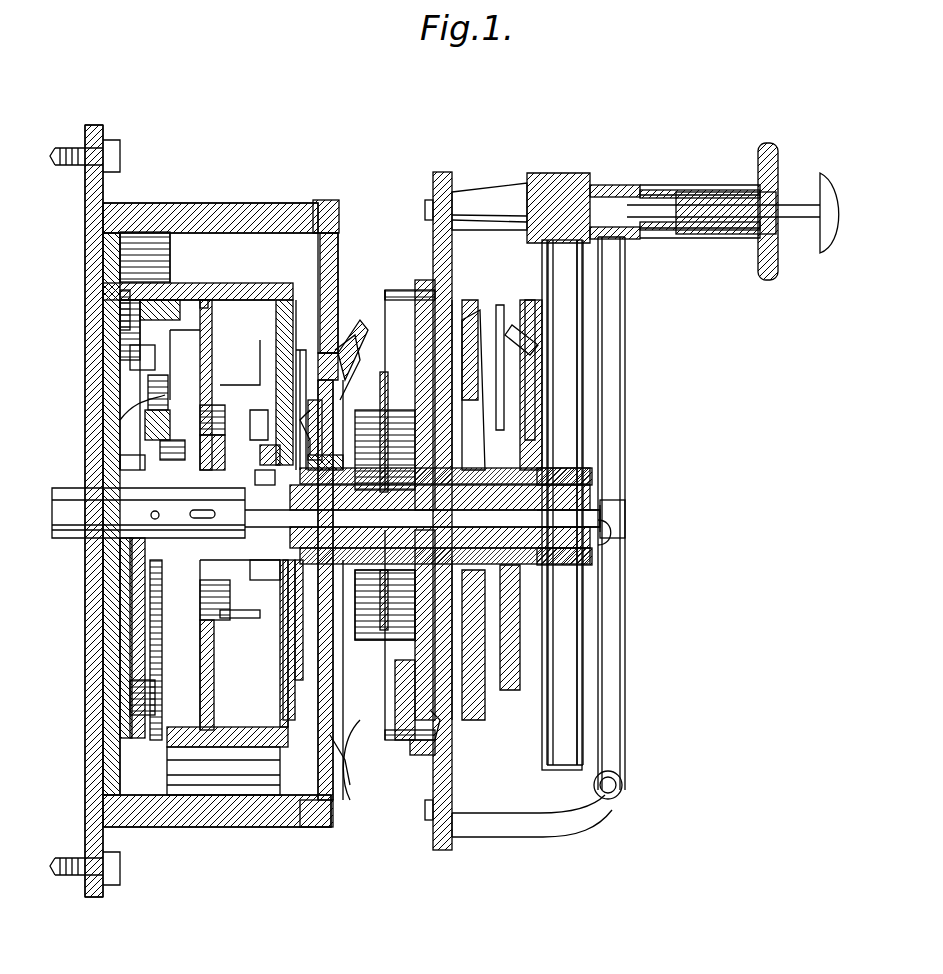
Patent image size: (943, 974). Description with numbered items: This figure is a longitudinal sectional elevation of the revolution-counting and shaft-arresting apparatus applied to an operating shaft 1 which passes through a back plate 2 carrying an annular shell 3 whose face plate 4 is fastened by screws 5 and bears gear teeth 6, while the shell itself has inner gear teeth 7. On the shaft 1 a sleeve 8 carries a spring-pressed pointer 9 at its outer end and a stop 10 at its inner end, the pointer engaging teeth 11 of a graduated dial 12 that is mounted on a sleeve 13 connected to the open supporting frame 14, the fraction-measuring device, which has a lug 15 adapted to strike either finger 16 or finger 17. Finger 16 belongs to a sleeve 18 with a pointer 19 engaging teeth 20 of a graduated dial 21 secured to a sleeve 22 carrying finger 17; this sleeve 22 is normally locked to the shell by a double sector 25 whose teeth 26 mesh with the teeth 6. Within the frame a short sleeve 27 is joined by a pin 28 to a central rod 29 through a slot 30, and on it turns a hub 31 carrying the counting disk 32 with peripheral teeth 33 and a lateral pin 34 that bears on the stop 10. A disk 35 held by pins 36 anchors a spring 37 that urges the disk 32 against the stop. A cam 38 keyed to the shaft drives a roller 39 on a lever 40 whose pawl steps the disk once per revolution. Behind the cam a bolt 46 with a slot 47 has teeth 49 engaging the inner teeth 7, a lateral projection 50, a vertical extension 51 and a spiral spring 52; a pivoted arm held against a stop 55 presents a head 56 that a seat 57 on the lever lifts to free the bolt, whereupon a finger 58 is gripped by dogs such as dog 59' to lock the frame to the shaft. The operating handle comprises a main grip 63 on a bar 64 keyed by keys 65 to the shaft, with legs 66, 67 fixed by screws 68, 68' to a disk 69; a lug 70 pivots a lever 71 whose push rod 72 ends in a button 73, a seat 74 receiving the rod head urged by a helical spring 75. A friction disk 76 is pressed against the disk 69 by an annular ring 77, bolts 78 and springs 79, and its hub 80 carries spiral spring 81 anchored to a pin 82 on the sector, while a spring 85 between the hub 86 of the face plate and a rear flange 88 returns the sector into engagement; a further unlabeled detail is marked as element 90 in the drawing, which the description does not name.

The shaft 1 is at (70, 500).
The back plate 2 is at (176, 950).
The annular shell 3 is at (214, 160).
The face plate 4 is at (58, 336).
The screws 5 is at (339, 215).
The gear teeth 6 is at (370, 668).
The inner gear teeth 7 is at (393, 218).
The sleeve 8 is at (441, 940).
The pointer 9 is at (512, 260).
The stop 10 is at (256, 400).
The teeth 11 is at (521, 337).
The graduated dial 12 is at (535, 420).
The sleeve 13 is at (542, 440).
The supporting frame 14 is at (255, 283).
The lug 15 is at (302, 348).
The finger 16 is at (386, 405).
The finger 17 is at (300, 690).
The sleeve 18 is at (418, 288).
The pointer 19 is at (500, 370).
The teeth 20 is at (480, 295).
The graduated dial 21 is at (462, 360).
The sleeve 22 is at (522, 620).
The double sector 25 is at (395, 285).
The teeth 26 is at (356, 764).
The short sleeve 27 is at (186, 560).
The pin 28 is at (166, 503).
The rod 29 is at (600, 518).
The slot 30 is at (211, 502).
The hub 31 is at (275, 478).
The disk 32 is at (214, 680).
The teeth 33 is at (212, 735).
The pin 34 is at (246, 370).
The disk 35 is at (244, 621).
The pins 36 is at (247, 510).
The spring 37 is at (210, 455).
The cam 38 is at (181, 446).
The roller 39 is at (118, 418).
The lever 40 is at (173, 425).
The bolt 46 is at (118, 650).
The slot 47 is at (118, 466).
The teeth 49 is at (160, 770).
The lateral projection 50 is at (175, 320).
The vertical extension 51 is at (118, 300).
The spiral spring 52 is at (132, 320).
The stop 55 is at (176, 394).
The head 56 is at (207, 316).
The seat 57 is at (148, 358).
The finger 58 is at (165, 615).
The dog 59' is at (166, 697).
The main grip 63 is at (672, 185).
The bar 64 is at (570, 688).
The keys 65 is at (592, 478).
The leg 66 is at (520, 838).
The leg 67 is at (485, 195).
The screw 68 is at (409, 551).
The screw 68' is at (422, 180).
The disk 69 is at (445, 205).
The lug 70 is at (622, 785).
The lever 71 is at (625, 262).
The push rod 72 is at (790, 207).
The button 73 is at (830, 195).
The seat 74 is at (625, 518).
The helical spring 75 is at (615, 545).
The friction disk 76 is at (440, 735).
The annular ring 77 is at (420, 755).
The bolts 78 is at (395, 700).
The springs 79 is at (396, 355).
The hub 80 is at (390, 640).
The spiral spring 81 is at (378, 523).
The pin 82 is at (310, 430).
The spring 85 is at (318, 447).
The hub 86 is at (232, 600).
The rear flange 88 is at (275, 458).
The spring 90 is at (315, 400).